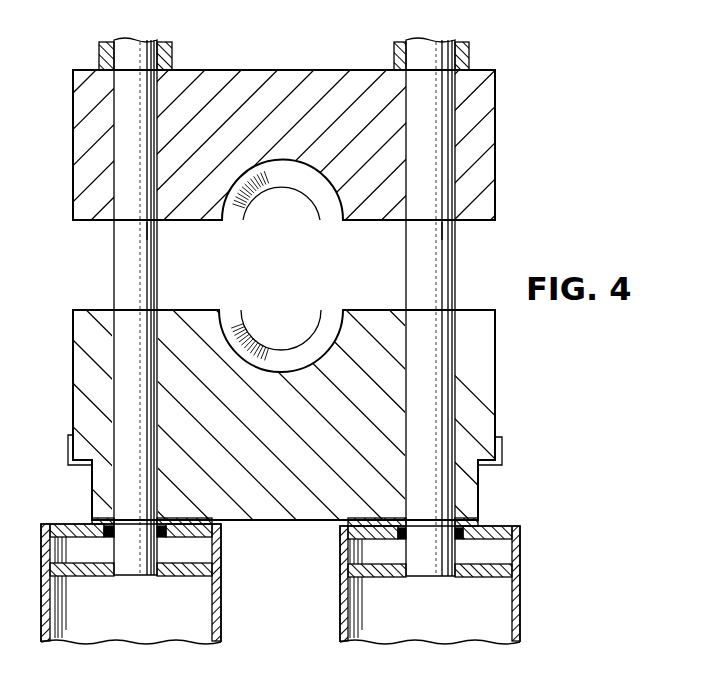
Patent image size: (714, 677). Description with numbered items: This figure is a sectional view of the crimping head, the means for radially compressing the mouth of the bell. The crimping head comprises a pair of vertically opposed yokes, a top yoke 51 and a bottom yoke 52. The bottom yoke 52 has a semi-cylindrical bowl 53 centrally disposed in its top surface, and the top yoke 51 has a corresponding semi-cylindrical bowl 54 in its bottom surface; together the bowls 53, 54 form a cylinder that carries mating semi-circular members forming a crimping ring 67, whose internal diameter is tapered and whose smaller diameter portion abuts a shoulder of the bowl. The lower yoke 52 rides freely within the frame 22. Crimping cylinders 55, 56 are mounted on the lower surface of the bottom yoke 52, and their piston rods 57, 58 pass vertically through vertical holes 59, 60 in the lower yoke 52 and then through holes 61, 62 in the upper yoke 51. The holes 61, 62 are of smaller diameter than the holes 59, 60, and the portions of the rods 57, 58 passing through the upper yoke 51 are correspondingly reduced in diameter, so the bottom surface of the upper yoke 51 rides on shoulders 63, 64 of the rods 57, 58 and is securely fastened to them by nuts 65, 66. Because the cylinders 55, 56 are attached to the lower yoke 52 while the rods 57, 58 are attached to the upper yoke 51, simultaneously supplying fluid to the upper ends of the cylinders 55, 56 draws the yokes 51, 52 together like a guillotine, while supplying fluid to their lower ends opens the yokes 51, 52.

The frame 22 is at (68, 455).
The top yoke 51 is at (495, 165).
The bottom yoke 52 is at (495, 384).
The semi-cylindrical bowl 53 is at (340, 328).
The semi-cylindrical bowl 54 is at (288, 162).
The crimping cylinder 55 is at (221, 590).
The crimping cylinder 56 is at (520, 590).
The piston rod 57 is at (112, 280).
The piston rod 58 is at (406, 278).
The vertical hole 59 is at (158, 310).
The vertical hole 60 is at (456, 312).
The hole 61 is at (157, 222).
The hole 62 is at (406, 222).
The shoulder 63 is at (110, 222).
The shoulder 64 is at (456, 226).
The nut 65 is at (99, 52).
The nut 66 is at (469, 58).
The crimping ring 67 is at (280, 350).